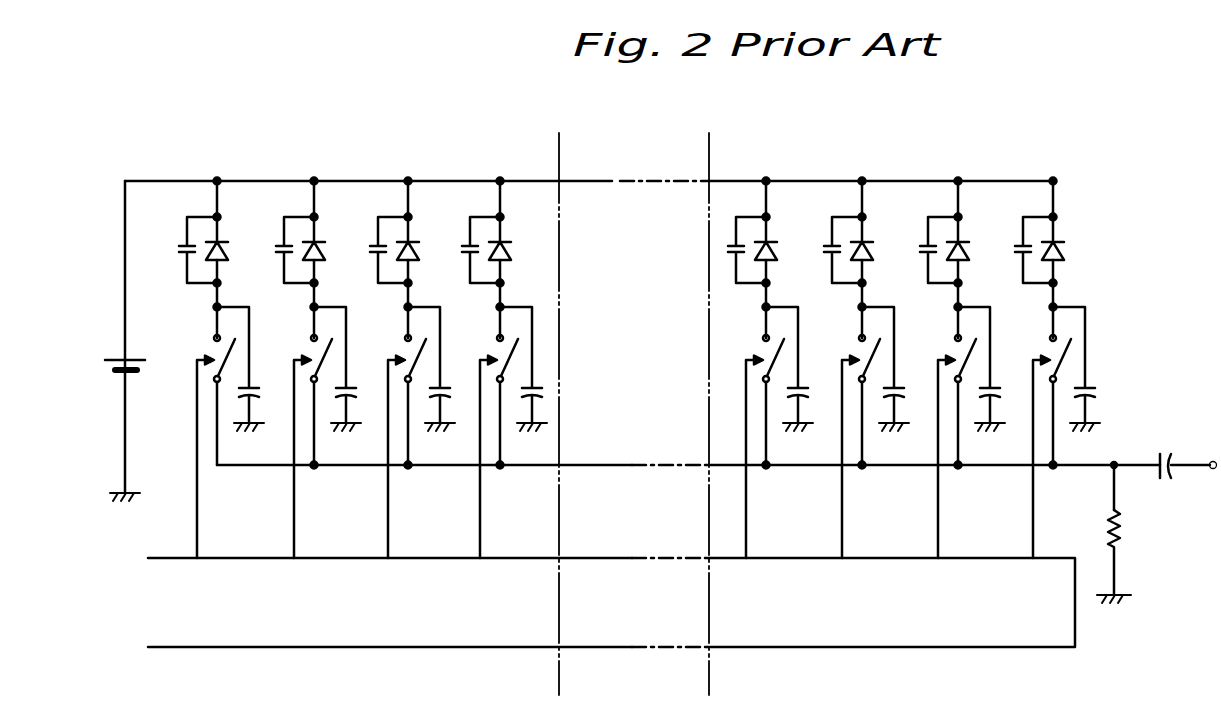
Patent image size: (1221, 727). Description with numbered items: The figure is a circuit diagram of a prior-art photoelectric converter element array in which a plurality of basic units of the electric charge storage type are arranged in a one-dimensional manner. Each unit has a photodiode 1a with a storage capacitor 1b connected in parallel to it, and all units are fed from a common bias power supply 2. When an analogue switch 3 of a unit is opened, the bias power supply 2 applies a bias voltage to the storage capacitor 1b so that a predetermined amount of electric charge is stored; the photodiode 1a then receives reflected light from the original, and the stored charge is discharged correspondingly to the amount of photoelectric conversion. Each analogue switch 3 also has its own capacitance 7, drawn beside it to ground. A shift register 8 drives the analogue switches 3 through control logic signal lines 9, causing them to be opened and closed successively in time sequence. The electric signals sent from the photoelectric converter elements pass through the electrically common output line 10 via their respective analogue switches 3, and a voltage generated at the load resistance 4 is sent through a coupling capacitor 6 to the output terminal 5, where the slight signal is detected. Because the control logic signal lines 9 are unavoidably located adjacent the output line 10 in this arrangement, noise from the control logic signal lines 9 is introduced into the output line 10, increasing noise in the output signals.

The photodiode 1a is at (649, 269).
The storage capacitor 1b is at (598, 234).
The bias power supply 2 is at (118, 372).
The analogue switch 3 is at (623, 390).
The load resistance 4 is at (1121, 530).
The output terminal 5 is at (1213, 461).
The coupling capacitor 6 is at (1156, 462).
The capacitance 7 is at (665, 369).
The shift register 8 is at (148, 595).
The control logic signal lines 9 is at (632, 457).
The output line 10 is at (1133, 468).